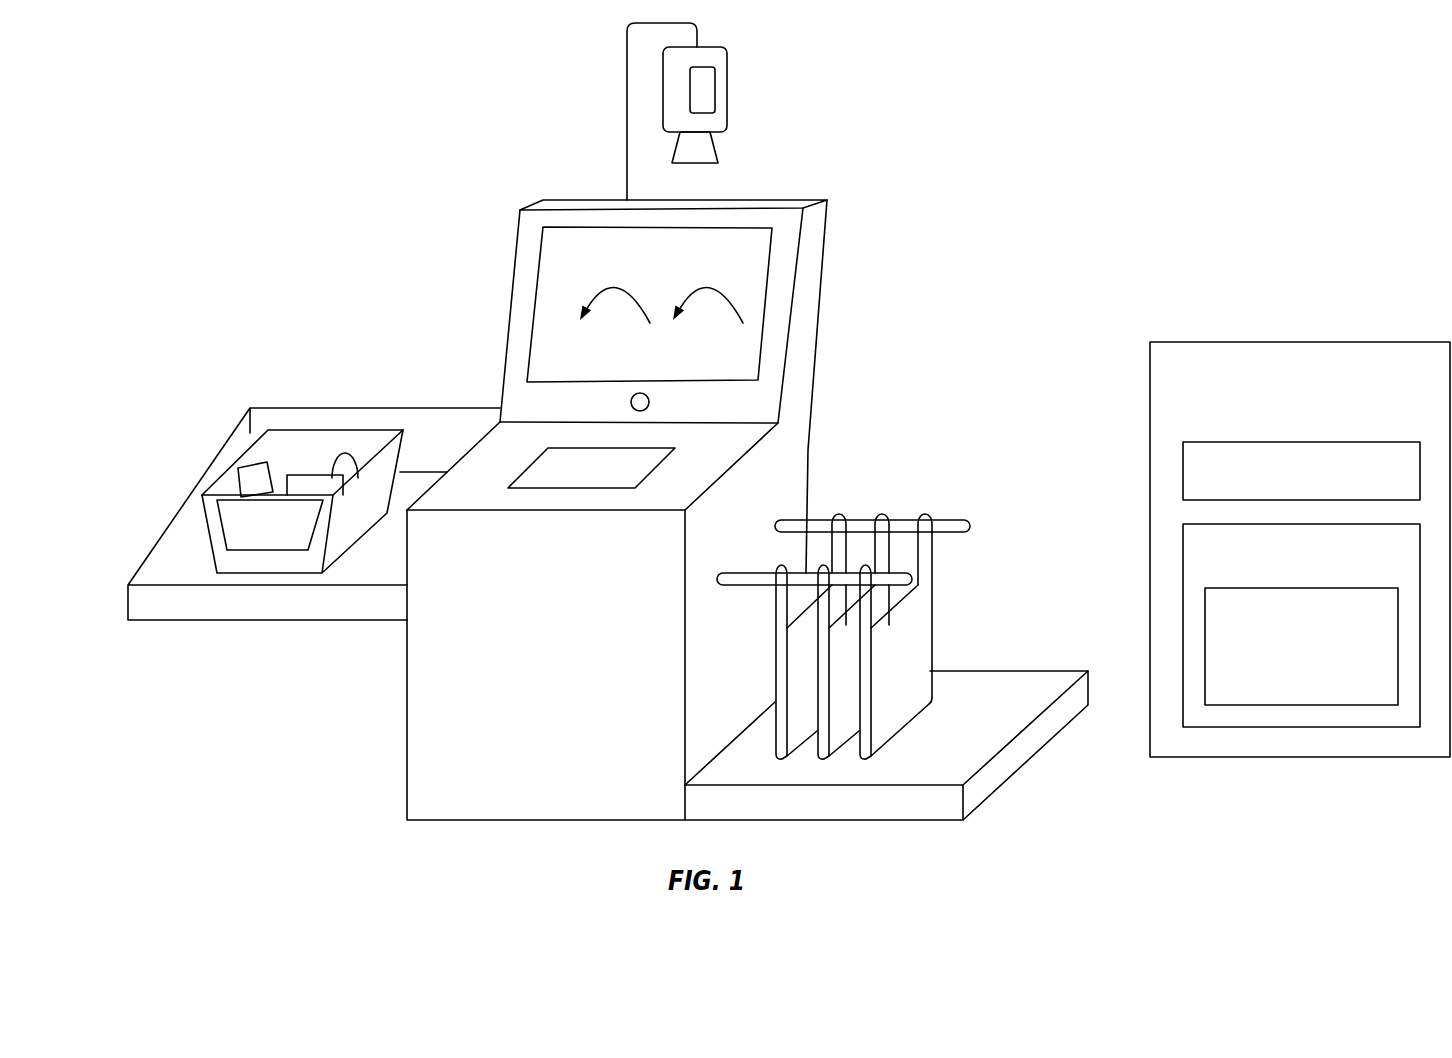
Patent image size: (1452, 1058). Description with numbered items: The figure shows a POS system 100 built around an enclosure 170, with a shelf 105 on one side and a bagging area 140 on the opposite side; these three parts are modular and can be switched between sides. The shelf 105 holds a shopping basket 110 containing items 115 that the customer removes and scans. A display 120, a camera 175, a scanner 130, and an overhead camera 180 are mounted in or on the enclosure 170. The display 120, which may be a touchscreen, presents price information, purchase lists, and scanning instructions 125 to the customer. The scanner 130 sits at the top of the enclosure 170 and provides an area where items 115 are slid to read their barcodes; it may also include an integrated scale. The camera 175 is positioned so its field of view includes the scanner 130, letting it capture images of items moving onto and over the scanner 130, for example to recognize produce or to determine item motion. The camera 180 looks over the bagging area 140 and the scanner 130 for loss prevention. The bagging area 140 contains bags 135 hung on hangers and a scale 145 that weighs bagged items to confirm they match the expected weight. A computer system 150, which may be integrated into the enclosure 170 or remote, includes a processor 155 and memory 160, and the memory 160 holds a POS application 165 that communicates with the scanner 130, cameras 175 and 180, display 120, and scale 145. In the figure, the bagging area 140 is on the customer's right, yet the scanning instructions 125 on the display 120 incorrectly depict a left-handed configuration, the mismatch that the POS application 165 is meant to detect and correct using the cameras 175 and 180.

The POS system 100 is at (1158, 218).
The shelf 105 is at (175, 503).
The shopping basket 110 is at (223, 468).
The items 115 is at (305, 477).
The display 120 is at (760, 228).
The scanning instructions 125 is at (702, 270).
The scanner 130 is at (570, 488).
The bags 135 is at (874, 489).
The bagging area 140 is at (1072, 580).
The scale 145 is at (847, 800).
The computer system 150 is at (1281, 423).
The processor 155 is at (1400, 483).
The memory 160 is at (1378, 564).
The POS application 165 is at (1280, 688).
The enclosure 170 is at (407, 730).
The camera 175 is at (650, 401).
The camera 180 is at (663, 91).